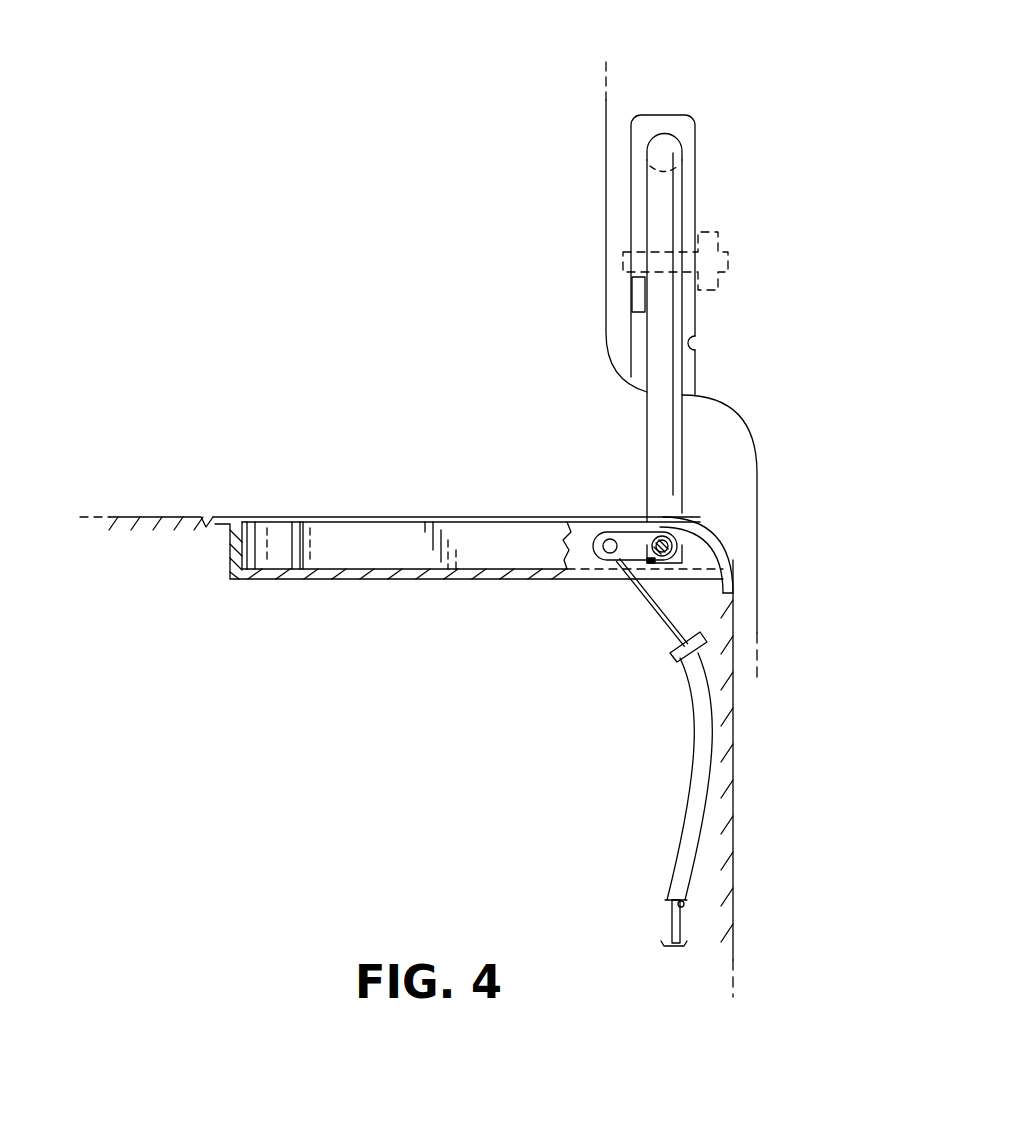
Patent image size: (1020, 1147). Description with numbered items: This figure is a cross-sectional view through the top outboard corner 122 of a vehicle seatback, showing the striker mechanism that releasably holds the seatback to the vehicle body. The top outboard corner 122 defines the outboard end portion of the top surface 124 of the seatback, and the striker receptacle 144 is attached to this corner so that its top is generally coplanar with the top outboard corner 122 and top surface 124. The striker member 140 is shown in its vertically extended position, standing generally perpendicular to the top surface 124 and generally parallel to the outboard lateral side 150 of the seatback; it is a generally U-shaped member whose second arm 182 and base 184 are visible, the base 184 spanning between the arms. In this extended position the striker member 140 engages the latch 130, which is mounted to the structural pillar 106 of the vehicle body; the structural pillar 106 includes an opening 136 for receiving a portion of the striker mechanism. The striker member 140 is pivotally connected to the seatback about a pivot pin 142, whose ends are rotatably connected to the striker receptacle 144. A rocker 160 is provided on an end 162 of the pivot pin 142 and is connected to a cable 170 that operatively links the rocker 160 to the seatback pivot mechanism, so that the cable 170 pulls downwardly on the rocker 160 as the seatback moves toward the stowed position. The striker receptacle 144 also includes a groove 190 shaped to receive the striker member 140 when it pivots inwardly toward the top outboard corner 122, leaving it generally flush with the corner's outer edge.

The structural pillar 106 is at (606, 165).
The top outboard corner 122 is at (152, 515).
The top surface 124 is at (123, 515).
The latch 130 is at (687, 240).
The opening 136 is at (690, 348).
The striker member 140 is at (683, 173).
The pivot pin 142 is at (675, 522).
The striker receptacle 144 is at (365, 517).
The outboard lateral side 150 is at (733, 800).
The rocker 160 is at (628, 540).
The end 162 is at (672, 532).
The cable 170 is at (647, 602).
The second arm 182 is at (667, 437).
The base 184 is at (663, 133).
The groove 190 is at (280, 538).